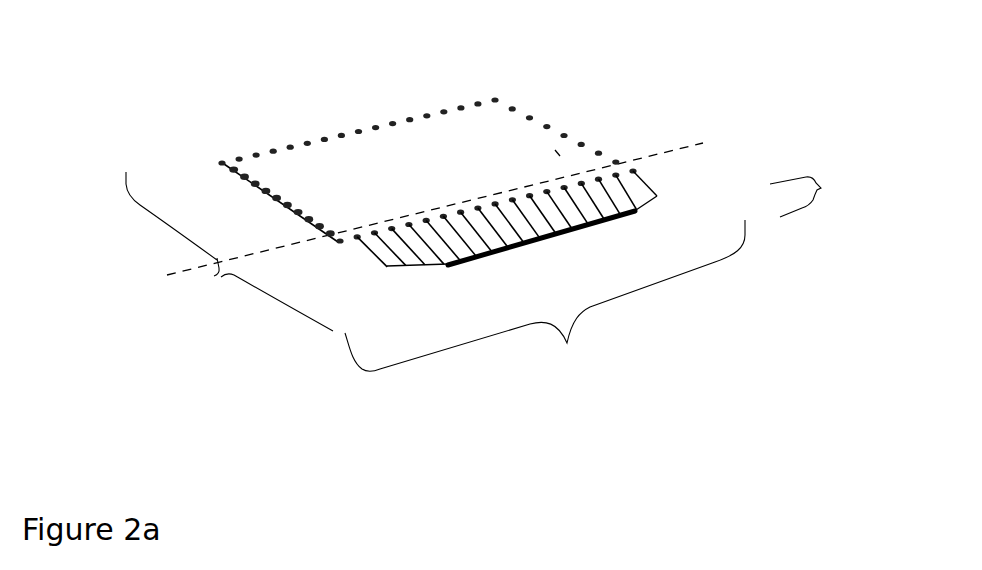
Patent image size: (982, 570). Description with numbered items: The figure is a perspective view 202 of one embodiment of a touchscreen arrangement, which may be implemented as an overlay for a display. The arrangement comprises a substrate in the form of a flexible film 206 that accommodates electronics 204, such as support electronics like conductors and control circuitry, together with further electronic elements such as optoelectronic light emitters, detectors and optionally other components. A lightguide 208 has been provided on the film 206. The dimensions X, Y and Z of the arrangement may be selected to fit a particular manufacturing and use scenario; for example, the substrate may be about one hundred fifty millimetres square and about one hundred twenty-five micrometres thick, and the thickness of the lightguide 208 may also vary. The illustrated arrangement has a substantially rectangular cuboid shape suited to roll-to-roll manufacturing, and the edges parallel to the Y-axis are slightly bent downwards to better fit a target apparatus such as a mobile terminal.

The perspective view 202 is at (205, 46).
The electronics 204 is at (430, 107).
The film 206 is at (393, 275).
The lightguide 208 is at (558, 153).